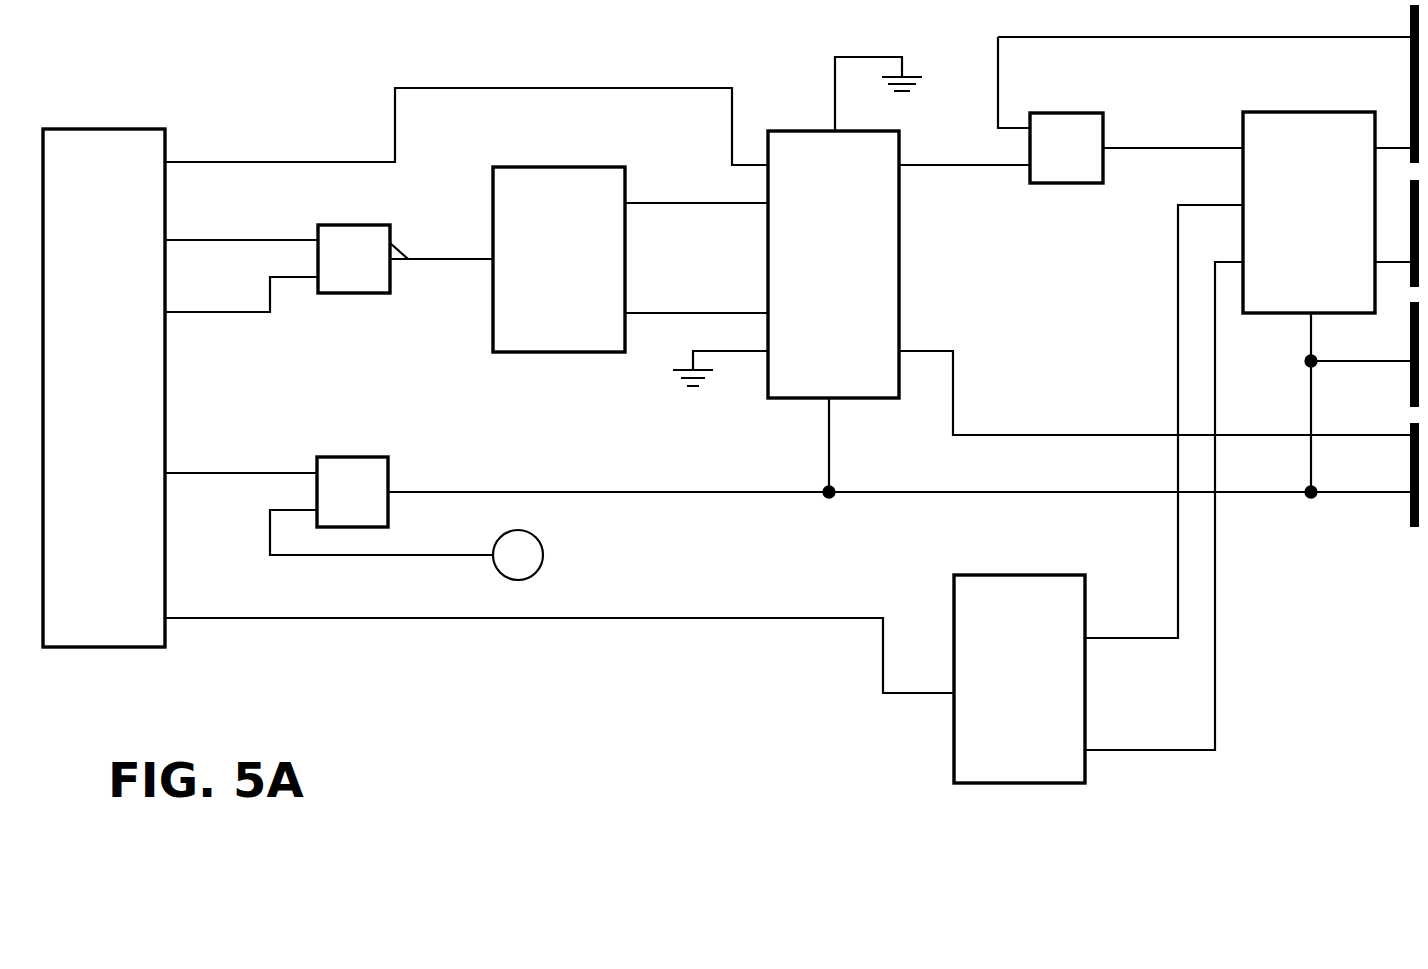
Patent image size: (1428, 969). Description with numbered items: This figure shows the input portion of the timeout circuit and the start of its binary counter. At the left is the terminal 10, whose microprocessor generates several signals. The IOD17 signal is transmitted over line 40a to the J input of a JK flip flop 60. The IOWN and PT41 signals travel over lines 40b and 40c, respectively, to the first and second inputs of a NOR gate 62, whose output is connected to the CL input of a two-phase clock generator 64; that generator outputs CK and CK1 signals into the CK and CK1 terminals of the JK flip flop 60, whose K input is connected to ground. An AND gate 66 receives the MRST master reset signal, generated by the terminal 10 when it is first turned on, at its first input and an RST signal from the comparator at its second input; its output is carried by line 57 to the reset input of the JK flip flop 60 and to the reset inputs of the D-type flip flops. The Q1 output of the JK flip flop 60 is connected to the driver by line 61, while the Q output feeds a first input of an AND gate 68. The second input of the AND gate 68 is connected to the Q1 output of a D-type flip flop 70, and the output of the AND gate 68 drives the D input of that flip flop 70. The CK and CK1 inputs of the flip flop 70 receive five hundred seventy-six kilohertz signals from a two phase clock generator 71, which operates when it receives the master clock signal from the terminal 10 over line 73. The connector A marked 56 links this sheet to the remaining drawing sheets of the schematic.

The terminal 10 is at (127, 647).
The line 40a is at (280, 162).
The line 40b is at (278, 240).
The line 40c is at (290, 277).
The NOR gate 62 is at (375, 225).
The two-phase clock generator 64 is at (562, 167).
The JK flip flop 60 is at (893, 222).
The line 61 is at (953, 397).
The line 57 is at (670, 492).
The AND gate 66 is at (368, 457).
The connector A 56 is at (420, 555).
The AND gate 68 is at (1083, 113).
The D-type flip flop 70 is at (1255, 112).
The two phase clock generator 71 is at (1025, 575).
The line 73 is at (770, 618).